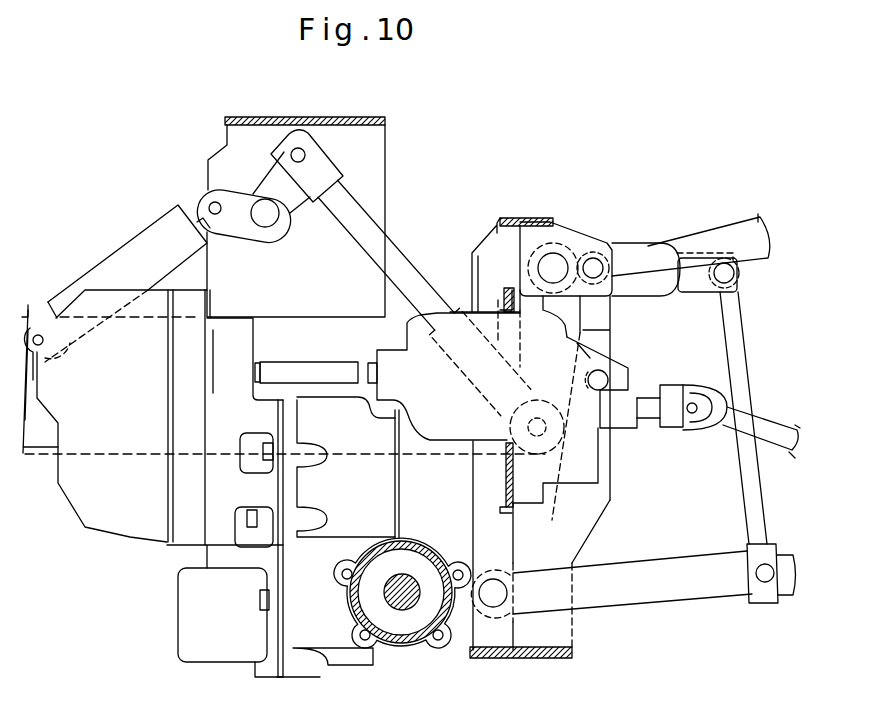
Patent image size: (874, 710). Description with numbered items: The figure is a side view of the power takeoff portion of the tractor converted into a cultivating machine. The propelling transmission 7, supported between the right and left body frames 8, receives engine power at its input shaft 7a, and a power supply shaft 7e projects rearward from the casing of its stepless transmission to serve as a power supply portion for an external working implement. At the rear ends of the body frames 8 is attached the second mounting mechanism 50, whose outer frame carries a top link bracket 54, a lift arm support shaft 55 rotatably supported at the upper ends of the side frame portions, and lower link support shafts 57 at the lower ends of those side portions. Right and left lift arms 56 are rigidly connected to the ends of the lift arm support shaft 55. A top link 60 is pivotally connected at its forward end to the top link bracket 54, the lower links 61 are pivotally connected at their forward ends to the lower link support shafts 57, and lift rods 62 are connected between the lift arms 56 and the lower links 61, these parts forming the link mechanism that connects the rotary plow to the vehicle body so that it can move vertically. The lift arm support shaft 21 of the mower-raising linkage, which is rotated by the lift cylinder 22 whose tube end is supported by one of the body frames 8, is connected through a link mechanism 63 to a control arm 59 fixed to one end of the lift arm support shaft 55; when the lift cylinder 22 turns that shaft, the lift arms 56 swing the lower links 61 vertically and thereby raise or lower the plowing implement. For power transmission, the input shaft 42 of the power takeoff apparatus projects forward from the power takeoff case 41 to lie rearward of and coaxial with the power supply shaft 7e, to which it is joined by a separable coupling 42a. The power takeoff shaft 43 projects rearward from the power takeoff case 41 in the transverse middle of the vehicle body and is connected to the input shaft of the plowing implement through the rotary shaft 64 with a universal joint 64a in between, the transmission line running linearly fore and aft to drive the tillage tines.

The propelling transmission 7 is at (85, 528).
The input shaft 7a is at (137, 520).
The power supply shaft 7e is at (263, 330).
The body frames 8 is at (43, 440).
The lift arm support shaft 21 is at (250, 206).
The lift cylinder 22 is at (135, 258).
The power takeoff case 41 is at (585, 458).
The input shaft 42 is at (360, 340).
The coupling 42a is at (300, 362).
The power takeoff shaft 43 is at (632, 388).
The second mounting mechanism 50 is at (515, 212).
The top link bracket 54 is at (558, 230).
The lift arm support shaft 55 is at (550, 267).
The lift arms 56 is at (630, 246).
The lower link support shafts 57 is at (491, 590).
The control arm 59 is at (553, 490).
The top link 60 is at (724, 233).
The lower links 61 is at (683, 588).
The lift rods 62 is at (750, 519).
The link mechanism 63 is at (398, 259).
The rotary shaft 64 is at (770, 430).
The universal joint 64a is at (688, 433).